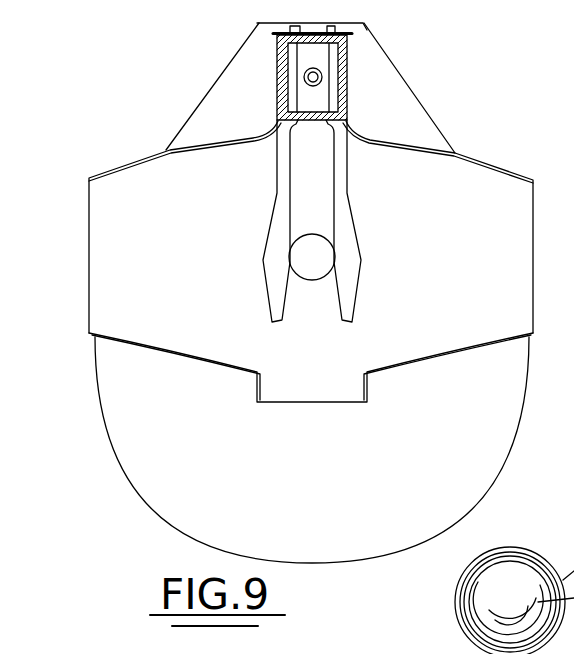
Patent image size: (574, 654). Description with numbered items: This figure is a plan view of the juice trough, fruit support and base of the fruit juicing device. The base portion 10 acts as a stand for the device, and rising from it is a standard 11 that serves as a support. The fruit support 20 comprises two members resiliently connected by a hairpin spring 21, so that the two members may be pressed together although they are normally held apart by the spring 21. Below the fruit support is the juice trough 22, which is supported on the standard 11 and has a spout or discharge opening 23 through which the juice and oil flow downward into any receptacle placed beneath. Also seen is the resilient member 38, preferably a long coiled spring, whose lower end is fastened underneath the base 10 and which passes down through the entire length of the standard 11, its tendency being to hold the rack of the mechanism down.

The base portion 10 is at (155, 453).
The standard 11 is at (300, 82).
The fruit support 20 is at (266, 190).
The hairpin spring 21 is at (345, 33).
The juice trough 22 is at (162, 310).
The spout or discharge opening 23 is at (323, 258).
The resilient member 38 is at (322, 76).